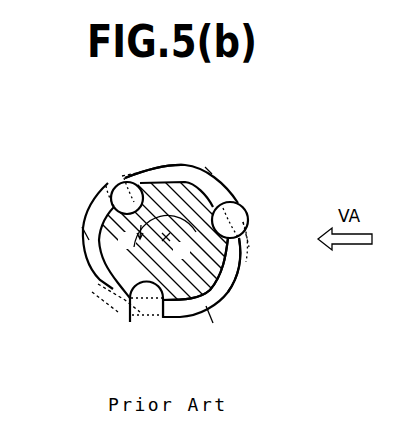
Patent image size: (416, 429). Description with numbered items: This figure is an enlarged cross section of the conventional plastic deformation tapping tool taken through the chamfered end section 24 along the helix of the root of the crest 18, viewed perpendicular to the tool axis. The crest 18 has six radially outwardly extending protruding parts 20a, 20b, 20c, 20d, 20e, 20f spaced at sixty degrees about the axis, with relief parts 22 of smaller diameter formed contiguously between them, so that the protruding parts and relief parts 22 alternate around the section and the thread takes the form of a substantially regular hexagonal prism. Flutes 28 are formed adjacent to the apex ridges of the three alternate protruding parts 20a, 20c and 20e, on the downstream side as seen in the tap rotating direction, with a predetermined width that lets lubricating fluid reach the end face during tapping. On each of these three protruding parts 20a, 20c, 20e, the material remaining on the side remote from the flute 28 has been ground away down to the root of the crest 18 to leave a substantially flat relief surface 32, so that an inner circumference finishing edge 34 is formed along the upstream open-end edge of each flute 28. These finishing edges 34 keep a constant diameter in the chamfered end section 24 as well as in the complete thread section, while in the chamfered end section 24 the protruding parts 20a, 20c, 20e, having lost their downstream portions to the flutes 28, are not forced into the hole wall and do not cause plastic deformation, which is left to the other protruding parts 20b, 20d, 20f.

The crest 18 is at (98, 250).
The protruding part 20a is at (253, 247).
The protruding part 20b is at (220, 325).
The protruding part 20c is at (104, 308).
The protruding part 20d is at (86, 233).
The protruding part 20e is at (124, 178).
The protruding part 20f is at (212, 173).
The relief part 22 is at (232, 288).
The chamfered end section 24 is at (258, 152).
The flute 28 is at (112, 200).
The relief surface 32 is at (148, 172).
The inner circumference finishing edge 34 is at (117, 177).